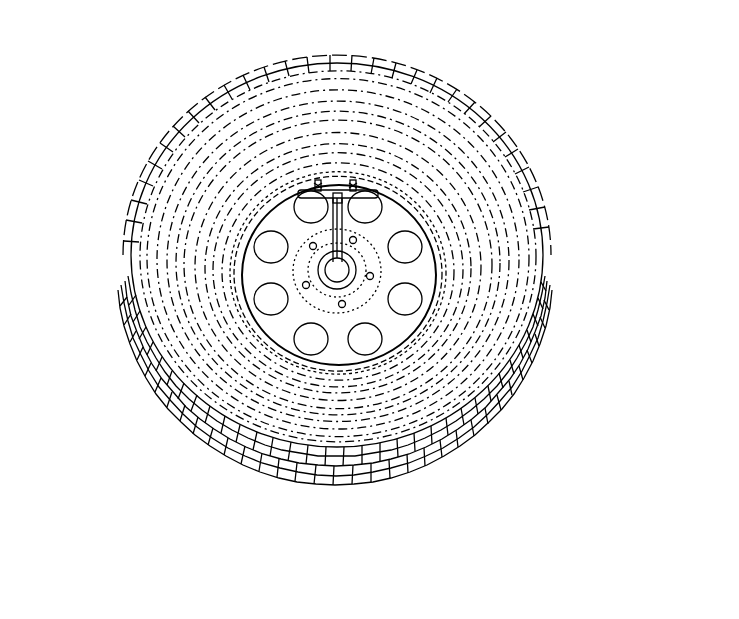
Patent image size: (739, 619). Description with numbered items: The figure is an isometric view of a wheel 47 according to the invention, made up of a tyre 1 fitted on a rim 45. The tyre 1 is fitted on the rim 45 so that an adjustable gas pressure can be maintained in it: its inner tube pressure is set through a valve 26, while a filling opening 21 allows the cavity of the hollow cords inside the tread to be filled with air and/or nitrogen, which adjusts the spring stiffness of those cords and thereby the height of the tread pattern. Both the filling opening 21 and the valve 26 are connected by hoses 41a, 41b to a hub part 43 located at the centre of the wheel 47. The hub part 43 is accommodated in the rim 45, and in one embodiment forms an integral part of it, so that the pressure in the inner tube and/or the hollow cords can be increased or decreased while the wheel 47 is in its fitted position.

The tyre 1 is at (163, 178).
The filling opening 21 is at (318, 183).
The valve 26 is at (356, 184).
The hose 41a is at (330, 212).
The hose 41b is at (320, 258).
The hub part 43 is at (358, 258).
The rim 45 is at (420, 250).
The wheel 47 is at (499, 78).